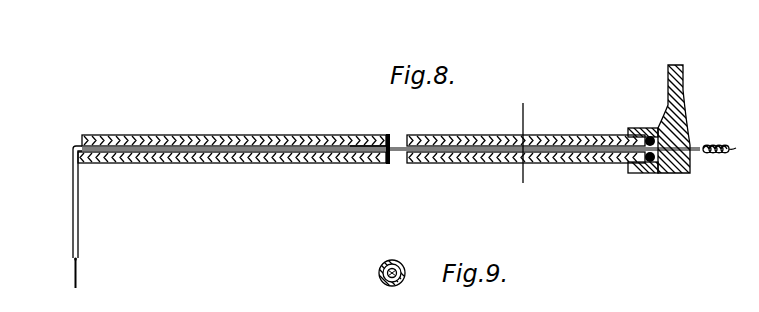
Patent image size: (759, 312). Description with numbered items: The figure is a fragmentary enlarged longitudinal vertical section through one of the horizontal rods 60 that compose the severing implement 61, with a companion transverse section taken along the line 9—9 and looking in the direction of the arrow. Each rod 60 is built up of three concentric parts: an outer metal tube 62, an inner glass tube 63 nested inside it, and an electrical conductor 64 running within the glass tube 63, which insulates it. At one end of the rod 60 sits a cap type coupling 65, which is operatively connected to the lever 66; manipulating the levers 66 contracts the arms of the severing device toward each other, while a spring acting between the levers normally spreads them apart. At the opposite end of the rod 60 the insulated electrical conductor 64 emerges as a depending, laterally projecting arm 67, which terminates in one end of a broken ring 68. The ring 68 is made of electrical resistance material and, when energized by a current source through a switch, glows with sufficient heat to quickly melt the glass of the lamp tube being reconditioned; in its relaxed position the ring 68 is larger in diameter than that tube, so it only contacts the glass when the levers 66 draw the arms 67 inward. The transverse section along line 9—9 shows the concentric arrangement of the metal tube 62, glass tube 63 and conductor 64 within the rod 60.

The horizontal rod 60 is at (273, 136).
The severing implement 61 is at (311, 135).
The outer metal tube 62 is at (360, 136).
The inner glass tube 63 is at (389, 135).
The electrical conductor 64 is at (428, 146).
The cap type coupling 65 is at (633, 128).
The lever 66 is at (684, 93).
The arm 67 is at (80, 220).
The broken ring 68 is at (78, 268).
The section line 9— 9 is at (525, 142).